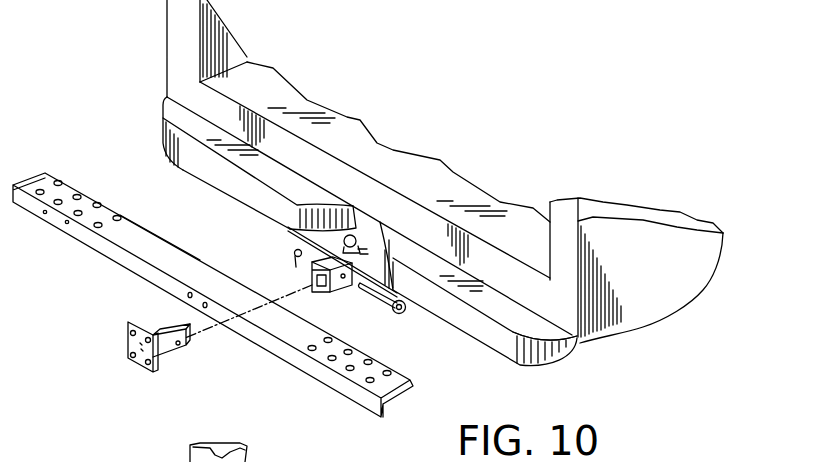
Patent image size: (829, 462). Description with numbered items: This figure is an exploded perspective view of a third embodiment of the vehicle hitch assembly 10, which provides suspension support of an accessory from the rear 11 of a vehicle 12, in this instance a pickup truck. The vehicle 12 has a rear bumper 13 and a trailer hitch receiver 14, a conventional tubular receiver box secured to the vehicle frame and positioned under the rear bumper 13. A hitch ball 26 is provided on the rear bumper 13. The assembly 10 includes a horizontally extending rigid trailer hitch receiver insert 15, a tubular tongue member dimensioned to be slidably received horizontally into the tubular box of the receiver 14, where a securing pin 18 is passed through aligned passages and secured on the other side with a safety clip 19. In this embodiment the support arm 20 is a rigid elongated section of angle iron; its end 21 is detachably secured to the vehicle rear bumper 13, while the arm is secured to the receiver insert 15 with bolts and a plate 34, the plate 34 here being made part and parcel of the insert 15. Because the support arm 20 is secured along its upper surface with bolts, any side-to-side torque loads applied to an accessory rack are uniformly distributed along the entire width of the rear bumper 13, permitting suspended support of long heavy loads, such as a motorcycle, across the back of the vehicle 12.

The hitch assembly 10 is at (153, 195).
The rear 11 is at (173, 62).
The vehicle 12 is at (640, 297).
The rear bumper 13 is at (547, 355).
The trailer hitch receiver 14 is at (337, 295).
The trailer hitch receiver insert 15 is at (163, 358).
The securing pin 18 is at (388, 314).
The safety clip 19 is at (292, 251).
The support arm 20 is at (140, 280).
The end of support arm 21 is at (158, 232).
The hitch ball 26 is at (355, 236).
The plate 34 is at (128, 358).